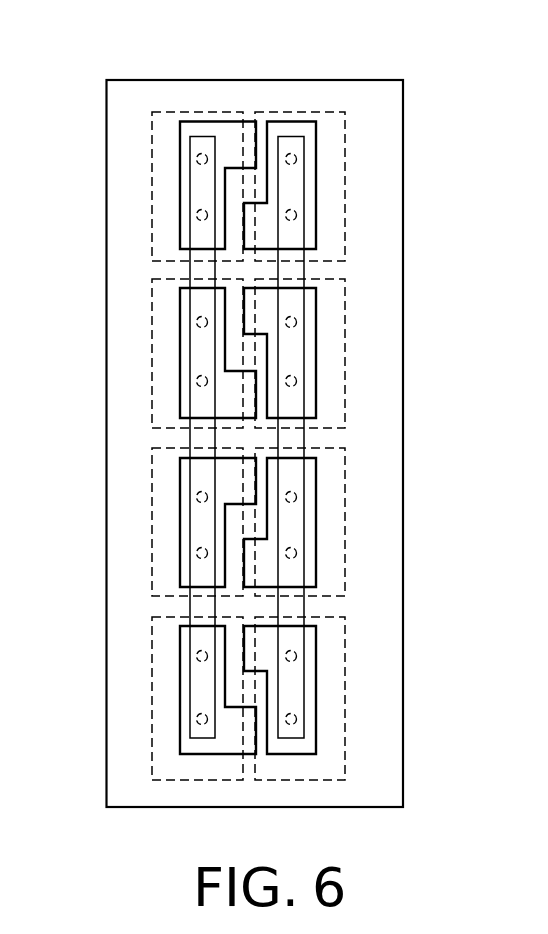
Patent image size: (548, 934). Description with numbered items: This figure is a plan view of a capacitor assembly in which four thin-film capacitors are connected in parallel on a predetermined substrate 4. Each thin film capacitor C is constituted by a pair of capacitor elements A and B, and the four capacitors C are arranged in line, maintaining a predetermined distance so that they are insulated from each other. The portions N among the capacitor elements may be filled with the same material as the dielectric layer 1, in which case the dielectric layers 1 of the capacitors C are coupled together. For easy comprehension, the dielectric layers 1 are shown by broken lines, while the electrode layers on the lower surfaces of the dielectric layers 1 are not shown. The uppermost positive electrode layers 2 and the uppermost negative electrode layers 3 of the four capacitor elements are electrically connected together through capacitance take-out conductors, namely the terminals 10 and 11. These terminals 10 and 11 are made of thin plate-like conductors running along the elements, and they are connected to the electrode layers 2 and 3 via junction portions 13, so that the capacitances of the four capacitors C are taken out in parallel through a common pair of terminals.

The dielectric layer 1 is at (162, 693).
The positive electrode layer 2 is at (352, 402).
The negative electrode layer 3 is at (227, 397).
The base plate 4 is at (125, 288).
The capacitance take-out conductor 10 is at (205, 605).
The capacitance take-out conductor 11 is at (297, 607).
The junction portion 13 is at (297, 720).
The capacitor element A is at (213, 120).
The capacitor element B is at (317, 120).
The thin film capacitor C is at (412, 3).
The portion among capacitor elements N is at (330, 270).